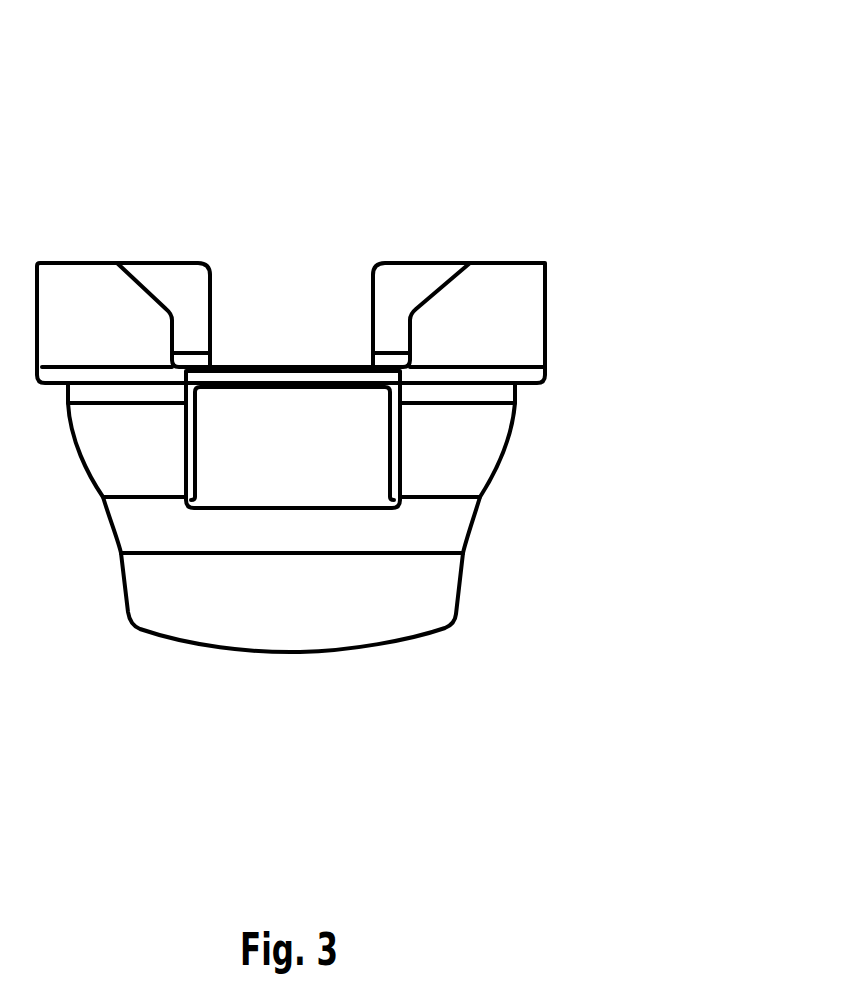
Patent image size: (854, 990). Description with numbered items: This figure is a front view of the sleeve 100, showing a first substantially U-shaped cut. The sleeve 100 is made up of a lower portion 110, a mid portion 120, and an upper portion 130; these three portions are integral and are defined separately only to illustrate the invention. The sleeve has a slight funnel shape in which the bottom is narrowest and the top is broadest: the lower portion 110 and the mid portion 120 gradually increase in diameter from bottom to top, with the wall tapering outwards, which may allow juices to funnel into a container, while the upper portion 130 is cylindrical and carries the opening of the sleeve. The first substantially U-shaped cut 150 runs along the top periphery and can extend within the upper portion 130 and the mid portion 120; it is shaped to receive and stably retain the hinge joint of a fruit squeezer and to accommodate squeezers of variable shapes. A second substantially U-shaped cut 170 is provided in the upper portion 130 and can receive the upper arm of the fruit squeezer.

The sleeve 100 is at (478, 68).
The lower portion 110 is at (467, 574).
The mid portion 120 is at (514, 441).
The upper portion 130 is at (552, 330).
The first substantially U-shaped cut 150 is at (185, 336).
The second substantially U-shaped cut 170 is at (364, 262).